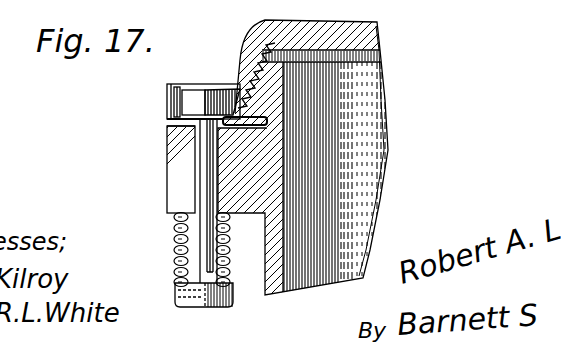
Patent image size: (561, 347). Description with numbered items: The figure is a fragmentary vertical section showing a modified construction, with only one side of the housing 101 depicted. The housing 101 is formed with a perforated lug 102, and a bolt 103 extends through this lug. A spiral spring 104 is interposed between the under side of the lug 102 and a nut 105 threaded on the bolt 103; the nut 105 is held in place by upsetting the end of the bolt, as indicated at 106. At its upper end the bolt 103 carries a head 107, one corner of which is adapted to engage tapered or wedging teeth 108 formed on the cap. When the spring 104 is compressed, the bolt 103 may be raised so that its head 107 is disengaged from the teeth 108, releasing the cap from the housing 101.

The housing 101 is at (272, 288).
The perforated lug 102 is at (172, 179).
The bolt 103 is at (178, 156).
The spiral spring 104 is at (178, 236).
The nut 105 is at (176, 297).
The upset end of bolt 106 is at (205, 308).
The head 107 is at (200, 97).
The tapered or wedging teeth 108 is at (203, 87).